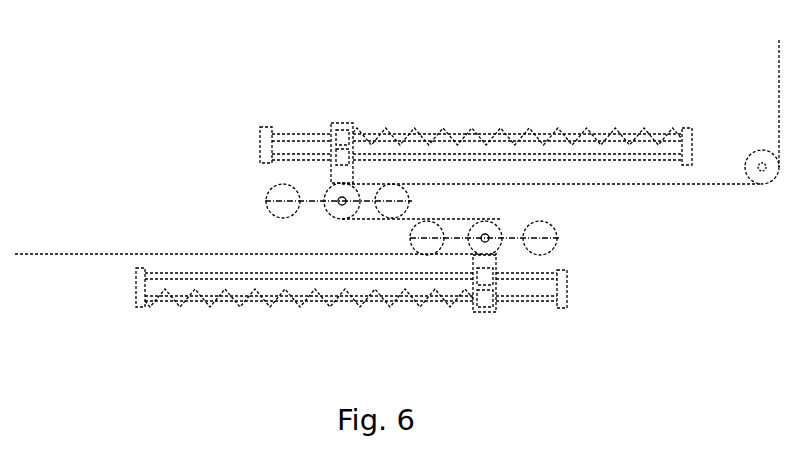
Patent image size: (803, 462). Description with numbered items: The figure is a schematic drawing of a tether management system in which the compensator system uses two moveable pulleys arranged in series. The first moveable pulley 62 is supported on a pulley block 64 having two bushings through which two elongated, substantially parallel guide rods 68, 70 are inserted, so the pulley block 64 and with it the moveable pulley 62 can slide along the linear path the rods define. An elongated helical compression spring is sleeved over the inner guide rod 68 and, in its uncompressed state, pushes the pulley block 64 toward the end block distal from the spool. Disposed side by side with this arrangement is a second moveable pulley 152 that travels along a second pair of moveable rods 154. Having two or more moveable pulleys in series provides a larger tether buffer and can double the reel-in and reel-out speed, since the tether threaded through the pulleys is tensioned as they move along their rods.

The second pair of moveable rods 154 is at (305, 158).
The second moveable pulley 152 is at (340, 218).
The moveable pulley 62 is at (492, 222).
The guide rod 70 is at (528, 275).
The inner guide rod 68 is at (535, 297).
The pulley block 64 is at (483, 312).